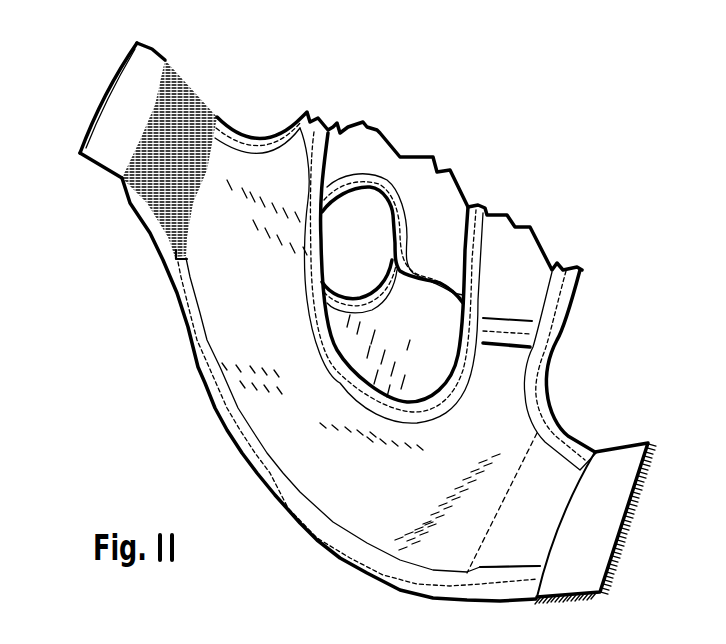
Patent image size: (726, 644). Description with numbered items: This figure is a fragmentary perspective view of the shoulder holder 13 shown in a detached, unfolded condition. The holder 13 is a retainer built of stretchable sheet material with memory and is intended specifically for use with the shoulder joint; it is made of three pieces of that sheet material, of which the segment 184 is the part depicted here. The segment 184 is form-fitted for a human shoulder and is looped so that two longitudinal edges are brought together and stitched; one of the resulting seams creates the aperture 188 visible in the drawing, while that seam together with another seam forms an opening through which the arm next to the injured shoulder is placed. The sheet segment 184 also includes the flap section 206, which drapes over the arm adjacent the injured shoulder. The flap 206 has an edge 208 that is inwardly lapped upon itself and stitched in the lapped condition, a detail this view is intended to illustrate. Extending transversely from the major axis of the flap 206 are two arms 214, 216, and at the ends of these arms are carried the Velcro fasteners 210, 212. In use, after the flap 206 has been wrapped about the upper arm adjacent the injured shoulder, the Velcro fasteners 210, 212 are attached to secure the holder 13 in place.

The holder 13 is at (240, 122).
The sheet segment 184 is at (306, 411).
The aperture 188 is at (377, 212).
The flap section 206 is at (470, 430).
The flap edge 208 is at (232, 429).
The Velcro fastener 210 is at (135, 82).
The Velcro fastener 212 is at (612, 570).
The arm 214 is at (190, 257).
The arm 216 is at (485, 566).